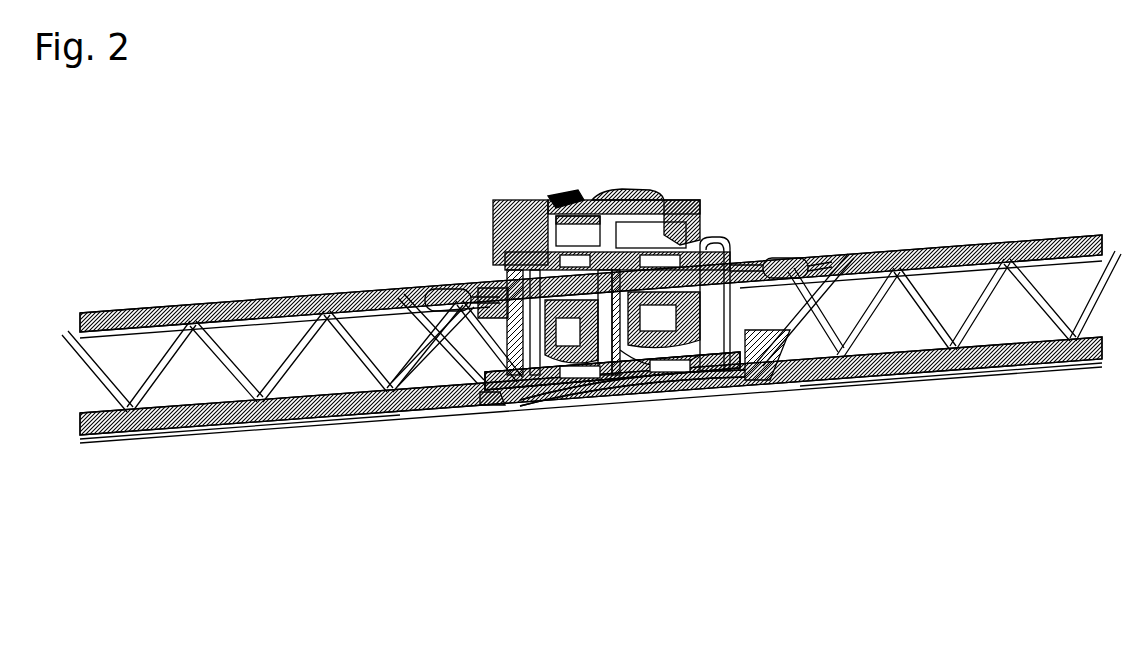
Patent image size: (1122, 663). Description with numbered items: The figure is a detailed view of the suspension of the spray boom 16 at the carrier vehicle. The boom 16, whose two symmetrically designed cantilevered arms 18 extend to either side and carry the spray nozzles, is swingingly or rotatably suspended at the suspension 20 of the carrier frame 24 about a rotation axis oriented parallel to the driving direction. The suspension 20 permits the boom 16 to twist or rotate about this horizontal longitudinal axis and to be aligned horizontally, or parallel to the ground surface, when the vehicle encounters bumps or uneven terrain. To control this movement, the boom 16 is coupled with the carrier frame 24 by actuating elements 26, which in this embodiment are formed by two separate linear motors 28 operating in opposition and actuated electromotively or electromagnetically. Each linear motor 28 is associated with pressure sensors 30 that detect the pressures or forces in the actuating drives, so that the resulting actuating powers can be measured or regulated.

The spray boom 16 is at (338, 447).
The cantilevered arms 18 is at (362, 521).
The suspension 20 is at (687, 210).
The carrier frame 24 is at (556, 205).
The actuating elements 26 is at (600, 405).
The linear motors 28 is at (700, 383).
The pressure sensors 30 is at (700, 383).